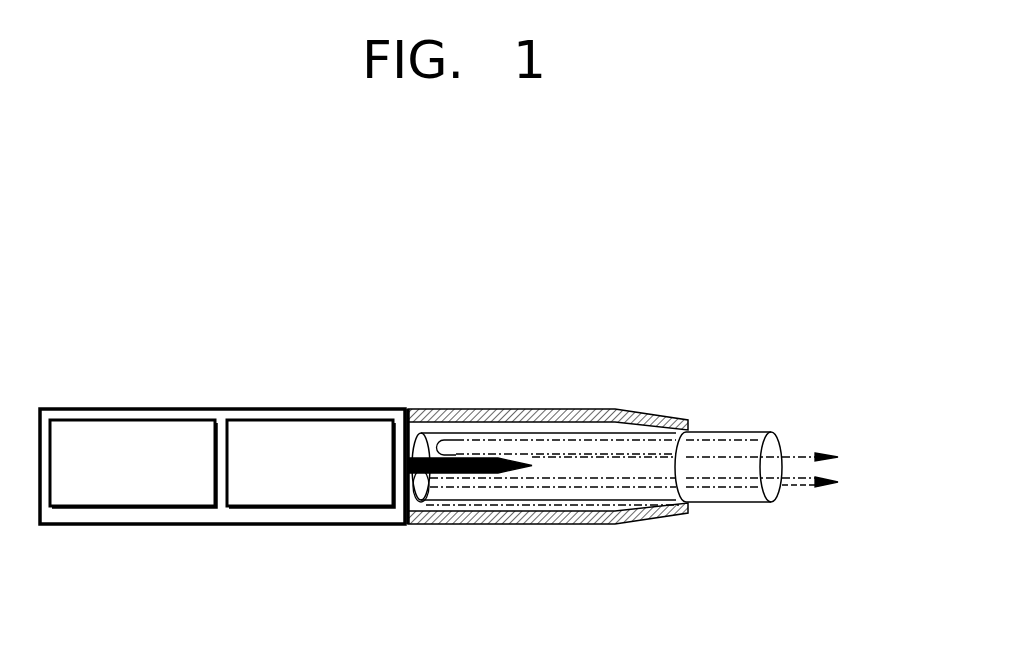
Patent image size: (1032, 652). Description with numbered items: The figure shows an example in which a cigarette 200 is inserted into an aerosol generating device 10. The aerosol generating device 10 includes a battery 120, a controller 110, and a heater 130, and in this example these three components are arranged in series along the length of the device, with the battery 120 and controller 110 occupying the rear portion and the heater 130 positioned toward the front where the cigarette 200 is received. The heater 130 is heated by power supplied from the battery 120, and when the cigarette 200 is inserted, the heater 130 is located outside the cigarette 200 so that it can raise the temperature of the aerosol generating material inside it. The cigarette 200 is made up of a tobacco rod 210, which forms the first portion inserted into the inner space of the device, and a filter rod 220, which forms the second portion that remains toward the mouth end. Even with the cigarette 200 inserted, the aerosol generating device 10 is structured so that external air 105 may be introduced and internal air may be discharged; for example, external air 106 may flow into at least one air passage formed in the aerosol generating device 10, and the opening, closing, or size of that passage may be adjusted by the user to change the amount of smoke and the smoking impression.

The aerosol generating device 10 is at (842, 329).
The external air 105 is at (747, 437).
The external air 106 is at (688, 508).
The controller 110 is at (327, 420).
The battery 120 is at (145, 420).
The heater 130 is at (467, 458).
The cigarette 200 is at (625, 475).
The tobacco rod 210 is at (560, 432).
The filter rod 220 is at (762, 432).